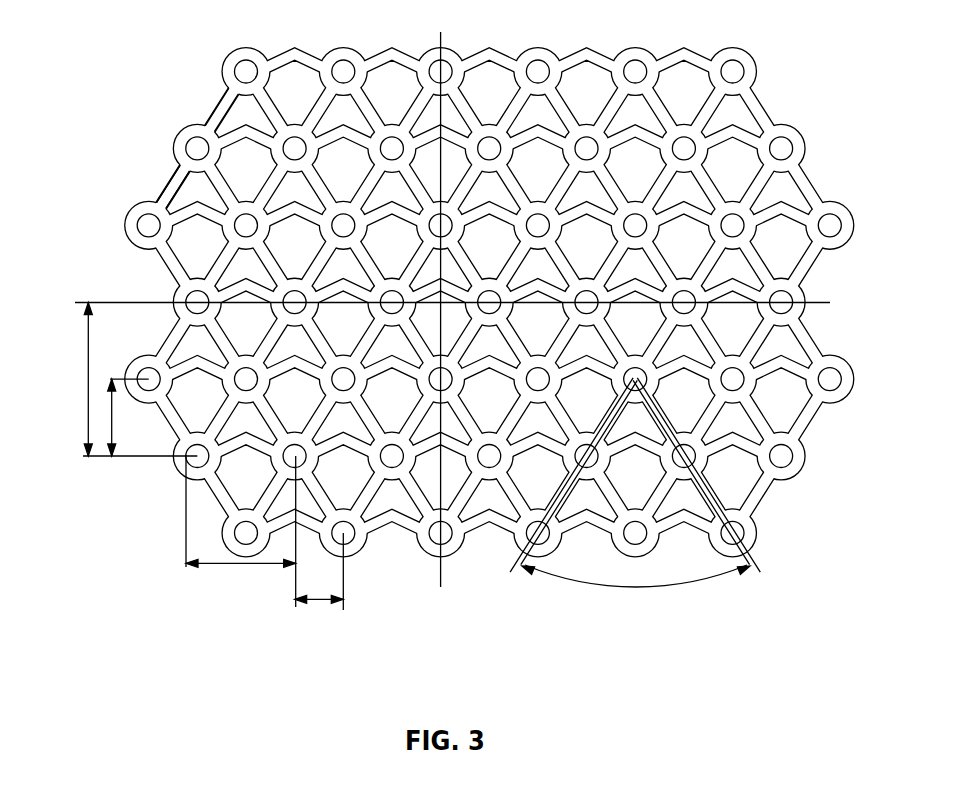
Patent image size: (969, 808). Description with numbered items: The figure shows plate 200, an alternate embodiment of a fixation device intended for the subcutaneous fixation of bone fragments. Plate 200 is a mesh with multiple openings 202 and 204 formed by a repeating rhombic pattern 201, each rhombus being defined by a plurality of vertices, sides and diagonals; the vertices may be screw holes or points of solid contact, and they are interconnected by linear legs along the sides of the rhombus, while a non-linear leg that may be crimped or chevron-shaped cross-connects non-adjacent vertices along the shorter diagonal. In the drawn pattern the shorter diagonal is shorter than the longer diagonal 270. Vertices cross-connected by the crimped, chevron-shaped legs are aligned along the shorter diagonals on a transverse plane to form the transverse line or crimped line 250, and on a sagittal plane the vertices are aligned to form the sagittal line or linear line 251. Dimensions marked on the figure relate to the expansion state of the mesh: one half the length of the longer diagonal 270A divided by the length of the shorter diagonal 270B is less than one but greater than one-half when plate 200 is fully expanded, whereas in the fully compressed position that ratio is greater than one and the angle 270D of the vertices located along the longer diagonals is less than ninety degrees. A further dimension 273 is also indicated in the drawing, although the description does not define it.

The plate 200 is at (387, 42).
The rhombic pattern 201 is at (158, 178).
The opening 202 is at (232, 124).
The opening 204 is at (190, 187).
The transverse line 250 is at (827, 302).
The sagittal line 251 is at (440, 575).
The longer diagonal 270 is at (87, 337).
The one half the length of the longer diagonal 270A is at (115, 433).
The length of the shorter diagonal 270B is at (212, 570).
The angle of the vertices 270D is at (625, 590).
The offset dimension 273 is at (318, 603).